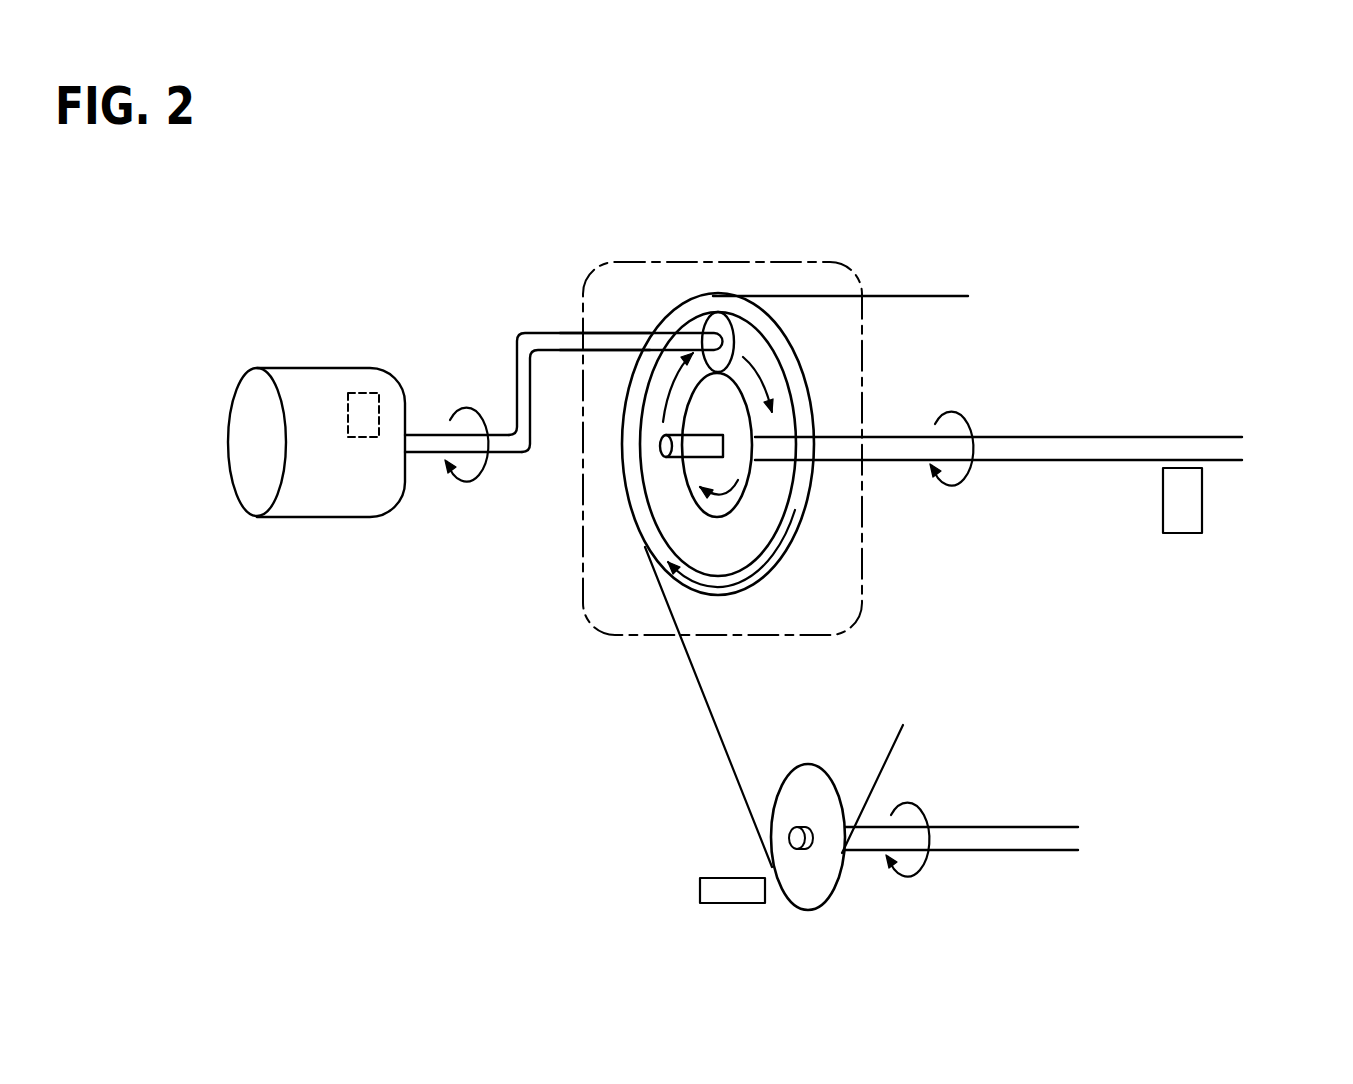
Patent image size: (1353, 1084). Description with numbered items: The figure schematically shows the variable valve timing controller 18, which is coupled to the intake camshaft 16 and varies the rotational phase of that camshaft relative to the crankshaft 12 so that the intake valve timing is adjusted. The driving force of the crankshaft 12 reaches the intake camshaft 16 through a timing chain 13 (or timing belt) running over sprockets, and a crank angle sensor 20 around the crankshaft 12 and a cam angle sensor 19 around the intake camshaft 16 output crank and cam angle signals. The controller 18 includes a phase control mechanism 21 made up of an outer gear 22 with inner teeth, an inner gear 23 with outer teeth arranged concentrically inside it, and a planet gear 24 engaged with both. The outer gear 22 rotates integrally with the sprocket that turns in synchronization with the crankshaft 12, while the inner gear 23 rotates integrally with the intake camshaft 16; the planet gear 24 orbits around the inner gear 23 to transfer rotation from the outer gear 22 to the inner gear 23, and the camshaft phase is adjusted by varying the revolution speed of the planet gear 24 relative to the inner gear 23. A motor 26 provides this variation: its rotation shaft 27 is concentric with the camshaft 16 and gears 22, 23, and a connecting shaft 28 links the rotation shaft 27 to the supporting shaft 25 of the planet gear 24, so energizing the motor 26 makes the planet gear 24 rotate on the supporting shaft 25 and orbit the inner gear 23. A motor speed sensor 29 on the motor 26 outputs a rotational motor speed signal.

The crankshaft 12 is at (967, 825).
The timing chain 13 is at (713, 723).
The intake camshaft 16 is at (1003, 436).
The variable valve timing controller 18 is at (525, 292).
The cam angle sensor 19 is at (1202, 500).
The crank angle sensor 20 is at (722, 878).
The phase control mechanism 21 is at (715, 258).
The outer gear 22 is at (790, 385).
The inner gear 23 is at (755, 472).
The planet gear 24 is at (738, 332).
The supporting shaft 25 is at (608, 333).
The motor 26 is at (322, 368).
The rotation shaft 27 is at (425, 435).
The connecting shaft 28 is at (513, 377).
The motor speed sensor 29 is at (365, 393).